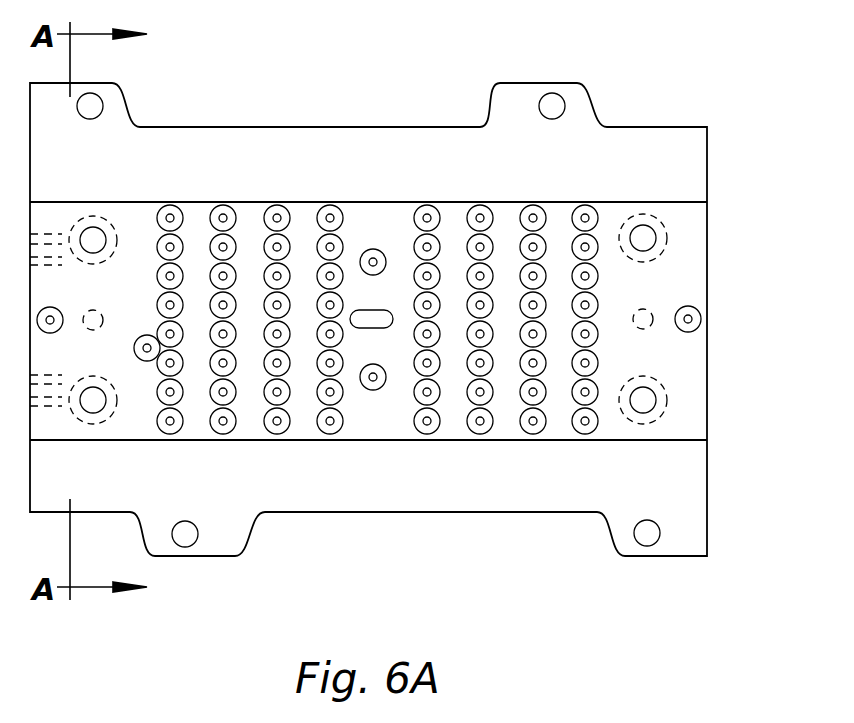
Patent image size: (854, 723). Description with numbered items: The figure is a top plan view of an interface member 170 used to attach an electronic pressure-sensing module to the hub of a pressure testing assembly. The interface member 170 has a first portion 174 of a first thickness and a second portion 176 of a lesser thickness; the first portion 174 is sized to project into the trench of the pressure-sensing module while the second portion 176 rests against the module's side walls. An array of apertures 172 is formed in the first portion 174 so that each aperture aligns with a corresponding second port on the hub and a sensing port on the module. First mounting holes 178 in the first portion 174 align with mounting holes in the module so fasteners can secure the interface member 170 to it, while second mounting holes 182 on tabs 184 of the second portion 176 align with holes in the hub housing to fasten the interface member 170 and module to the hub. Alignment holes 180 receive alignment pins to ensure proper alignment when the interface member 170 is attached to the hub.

The interface member 170 is at (690, 75).
The apertures 172 is at (437, 402).
The first portion 174 is at (690, 274).
The second portion 176 is at (688, 473).
The first mounting holes 178 is at (656, 237).
The alignment holes 180 is at (374, 249).
The second mounting holes 182 is at (103, 100).
The tabs 184 is at (120, 113).